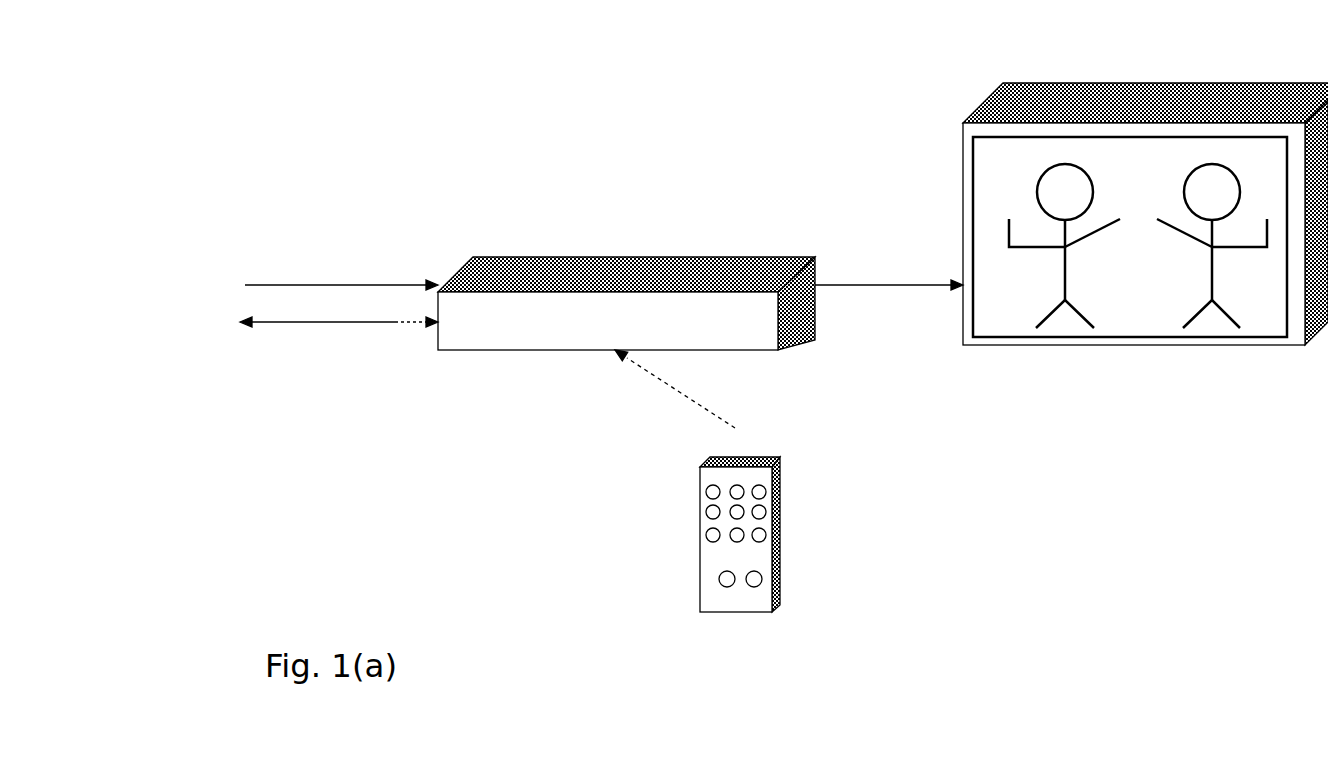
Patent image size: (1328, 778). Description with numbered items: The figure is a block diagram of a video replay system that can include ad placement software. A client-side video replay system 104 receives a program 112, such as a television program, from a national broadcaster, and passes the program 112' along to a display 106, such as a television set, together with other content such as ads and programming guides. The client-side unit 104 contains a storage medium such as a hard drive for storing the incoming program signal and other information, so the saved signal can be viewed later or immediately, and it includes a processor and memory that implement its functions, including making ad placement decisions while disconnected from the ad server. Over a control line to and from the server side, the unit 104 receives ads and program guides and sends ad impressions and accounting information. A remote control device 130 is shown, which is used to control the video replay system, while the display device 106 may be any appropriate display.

The client-side video replay system 104 is at (503, 243).
The display 106 is at (943, 95).
The program 112 is at (222, 230).
The program passed to display 112' is at (889, 239).
The remote control device 130 is at (688, 515).